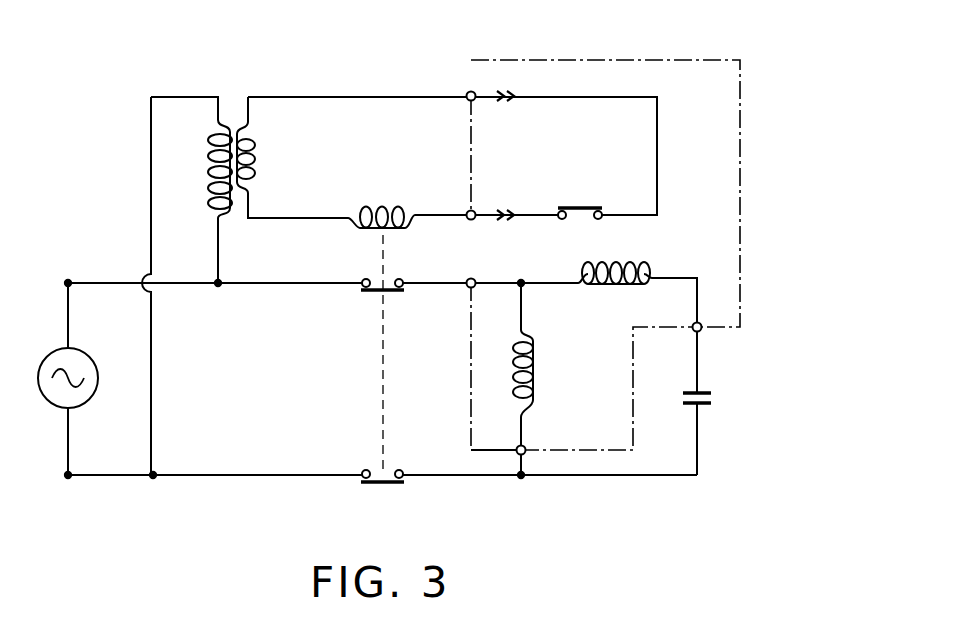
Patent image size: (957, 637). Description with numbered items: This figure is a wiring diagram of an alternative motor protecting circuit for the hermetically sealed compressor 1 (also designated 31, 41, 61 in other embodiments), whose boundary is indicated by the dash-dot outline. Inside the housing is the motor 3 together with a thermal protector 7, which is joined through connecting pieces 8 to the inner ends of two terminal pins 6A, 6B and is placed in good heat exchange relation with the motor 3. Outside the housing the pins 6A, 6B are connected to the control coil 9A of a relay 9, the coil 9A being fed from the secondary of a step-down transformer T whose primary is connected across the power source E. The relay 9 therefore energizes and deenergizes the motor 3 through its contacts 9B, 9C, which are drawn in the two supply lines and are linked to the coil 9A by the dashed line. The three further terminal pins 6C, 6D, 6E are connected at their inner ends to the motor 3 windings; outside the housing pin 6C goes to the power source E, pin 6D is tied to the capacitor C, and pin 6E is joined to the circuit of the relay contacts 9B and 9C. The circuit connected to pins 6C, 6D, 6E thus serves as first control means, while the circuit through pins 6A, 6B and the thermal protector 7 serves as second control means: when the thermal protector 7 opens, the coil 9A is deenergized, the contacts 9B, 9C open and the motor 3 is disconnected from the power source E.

The hermetically sealed compressor 1 is at (680, 58).
The relay unit (second embodiment) 31 is at (673, 225).
The relay unit (third embodiment) 41 is at (673, 225).
The relay unit (fourth embodiment) 61 is at (673, 225).
The motor 3 is at (645, 258).
The thermal protector 7 is at (590, 204).
The connecting pieces 8 is at (515, 92).
The relay 9 is at (347, 293).
The control coil 9A is at (358, 228).
The relay contact 9B is at (377, 295).
The relay contact 9C is at (378, 488).
The terminal pin 6A is at (467, 95).
The terminal pin 6B is at (467, 212).
The terminal pin 6C is at (466, 290).
The terminal pin 6D is at (528, 454).
The terminal pin 6E is at (702, 330).
The step-down transformer T is at (205, 172).
The power source E is at (55, 350).
The capacitor C is at (707, 408).